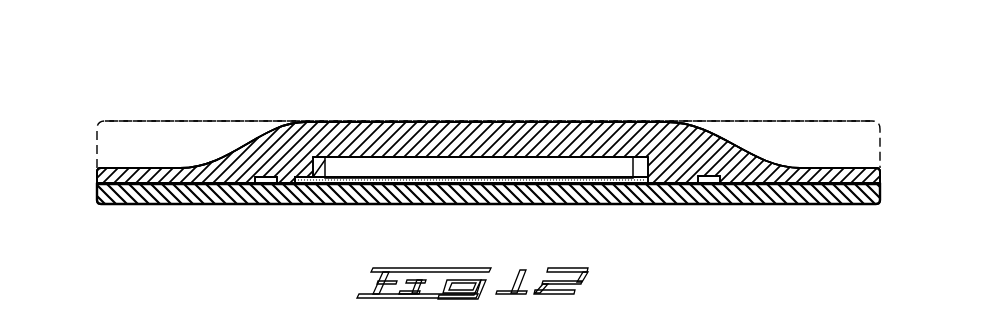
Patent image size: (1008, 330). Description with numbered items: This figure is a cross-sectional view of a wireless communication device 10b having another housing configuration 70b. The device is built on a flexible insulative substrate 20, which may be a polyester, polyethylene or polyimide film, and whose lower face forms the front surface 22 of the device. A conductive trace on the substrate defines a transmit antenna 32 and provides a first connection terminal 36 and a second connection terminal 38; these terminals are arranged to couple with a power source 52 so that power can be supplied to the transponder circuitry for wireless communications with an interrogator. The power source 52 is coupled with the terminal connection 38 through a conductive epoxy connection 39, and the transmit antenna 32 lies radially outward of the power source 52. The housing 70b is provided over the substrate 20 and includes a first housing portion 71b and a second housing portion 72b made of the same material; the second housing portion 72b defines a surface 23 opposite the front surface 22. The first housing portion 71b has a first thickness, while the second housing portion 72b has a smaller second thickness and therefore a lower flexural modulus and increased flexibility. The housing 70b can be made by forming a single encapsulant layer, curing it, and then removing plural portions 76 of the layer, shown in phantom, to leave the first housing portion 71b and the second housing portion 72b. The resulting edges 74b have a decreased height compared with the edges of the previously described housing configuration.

The wireless communication device 10b is at (780, 67).
The substrate 20 is at (784, 214).
The front surface 22 is at (177, 206).
The surface 23 is at (568, 122).
The transmit antenna 32 is at (266, 184).
The first connection terminal 36 is at (498, 184).
The second connection terminal 38 is at (302, 184).
The conductive epoxy connection 39 is at (312, 158).
The power source 52 is at (388, 168).
The housing 70b is at (205, 72).
The first housing portion 71b is at (507, 82).
The second housing portion 72b is at (165, 156).
The edges 74b is at (95, 185).
The portions of the layer 76 is at (240, 121).